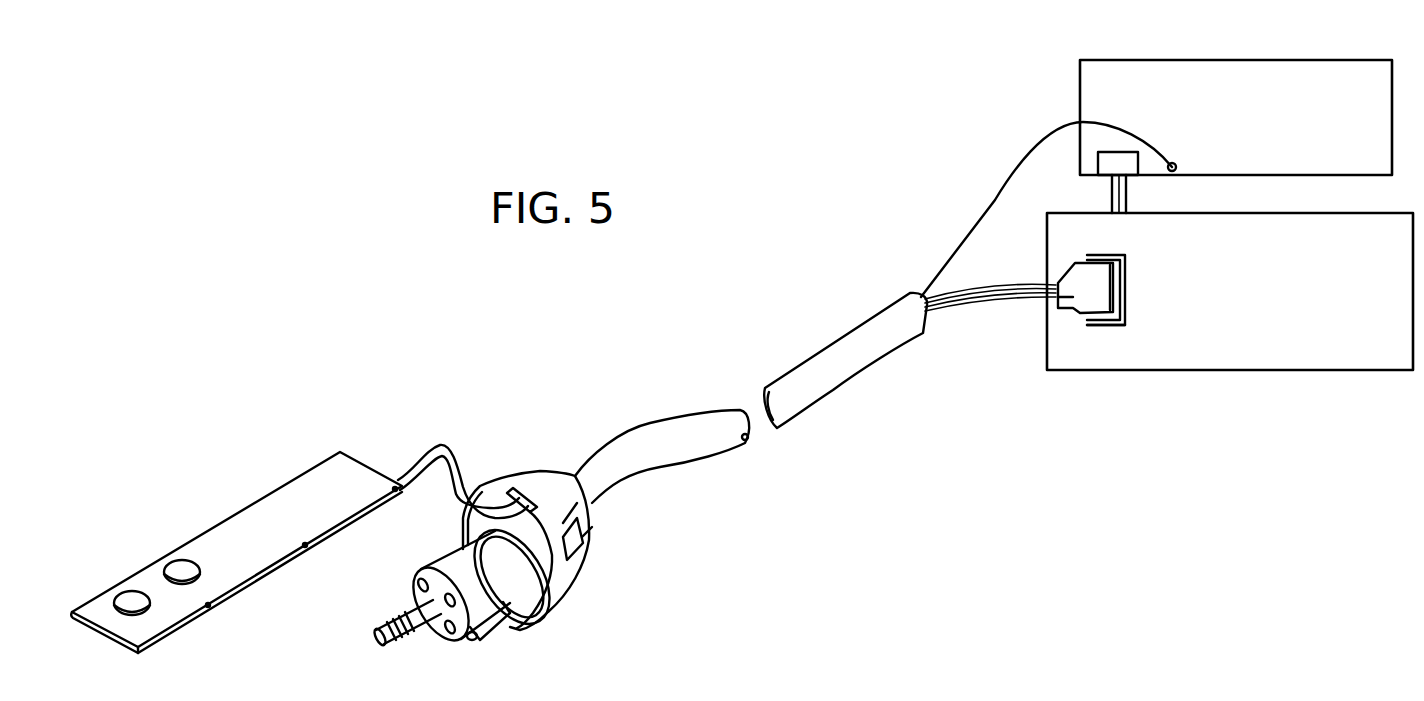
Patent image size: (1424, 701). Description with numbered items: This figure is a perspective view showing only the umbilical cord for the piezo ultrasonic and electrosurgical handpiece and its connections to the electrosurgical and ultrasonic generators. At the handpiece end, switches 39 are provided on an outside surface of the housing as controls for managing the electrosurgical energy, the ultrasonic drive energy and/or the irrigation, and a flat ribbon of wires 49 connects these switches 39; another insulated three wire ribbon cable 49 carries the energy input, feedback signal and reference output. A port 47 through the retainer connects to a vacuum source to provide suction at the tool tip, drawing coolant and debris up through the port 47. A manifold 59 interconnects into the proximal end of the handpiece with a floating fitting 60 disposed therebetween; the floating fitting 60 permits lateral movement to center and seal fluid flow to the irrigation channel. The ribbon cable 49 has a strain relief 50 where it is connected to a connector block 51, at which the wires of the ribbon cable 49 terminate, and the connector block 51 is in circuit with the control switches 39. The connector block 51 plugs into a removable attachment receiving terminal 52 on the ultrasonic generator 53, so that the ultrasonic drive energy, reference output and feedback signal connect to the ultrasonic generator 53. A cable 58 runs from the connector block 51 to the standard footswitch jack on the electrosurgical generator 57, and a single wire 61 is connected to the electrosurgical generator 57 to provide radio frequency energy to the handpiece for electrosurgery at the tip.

The switches 39 is at (132, 598).
The port 47 is at (377, 648).
The ribbon of wires 49 is at (437, 445).
The strain relief 50 is at (1077, 277).
The connector block 51 is at (1110, 323).
The receiving terminal 52 is at (1127, 255).
The ultrasonic generator 53 is at (1390, 367).
The electrosurgical generator 57 is at (1148, 73).
The cable 58 is at (1110, 198).
The manifold 59 is at (693, 453).
The floating fitting 60 is at (497, 633).
The single wire 61 is at (970, 235).